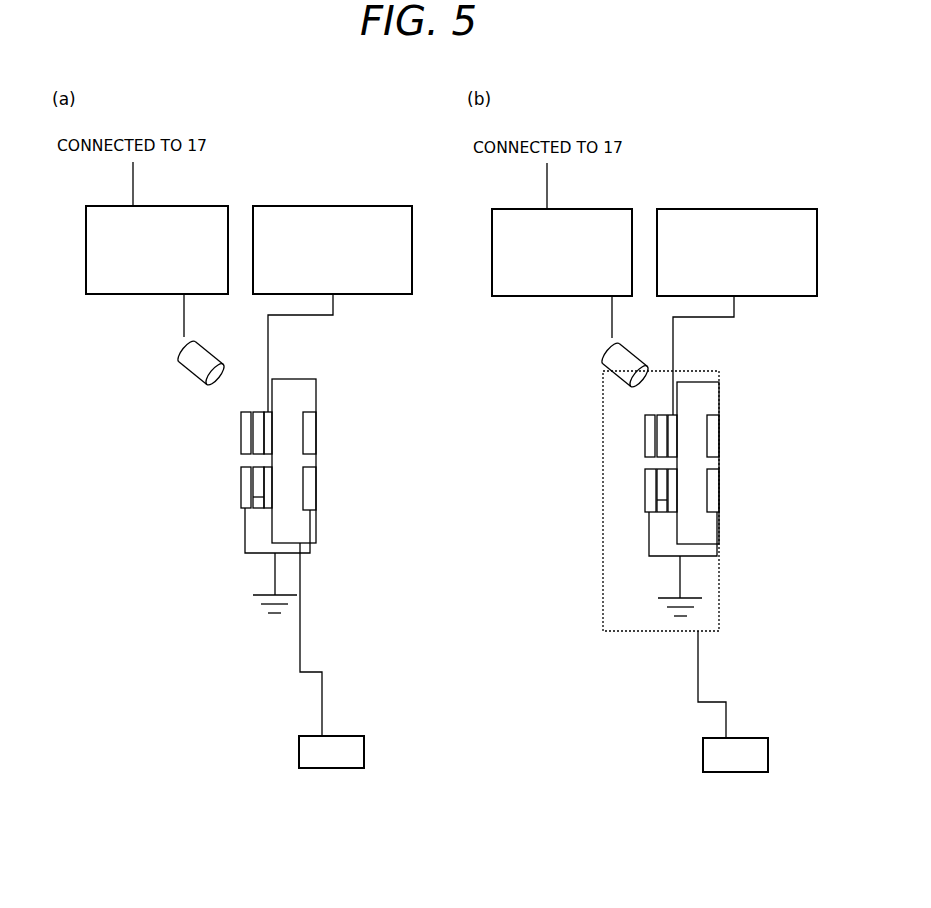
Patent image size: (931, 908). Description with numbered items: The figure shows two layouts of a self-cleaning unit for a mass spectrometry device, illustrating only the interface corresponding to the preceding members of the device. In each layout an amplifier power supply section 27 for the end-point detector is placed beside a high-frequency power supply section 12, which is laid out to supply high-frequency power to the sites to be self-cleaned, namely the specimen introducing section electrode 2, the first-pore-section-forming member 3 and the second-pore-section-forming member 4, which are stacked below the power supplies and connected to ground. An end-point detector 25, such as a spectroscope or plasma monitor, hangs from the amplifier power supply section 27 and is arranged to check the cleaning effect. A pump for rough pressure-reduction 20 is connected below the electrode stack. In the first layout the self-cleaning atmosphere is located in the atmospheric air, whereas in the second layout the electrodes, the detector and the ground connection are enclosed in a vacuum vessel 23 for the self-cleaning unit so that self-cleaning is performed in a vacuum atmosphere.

The amplifier power supply section 27 is at (175, 206).
The high-frequency power supply section 12 is at (362, 206).
The end-point detector 25 is at (185, 367).
The specimen introducing section electrode 2 is at (240, 432).
The first-pore-section-forming member 3 is at (263, 479).
The second-pore-section-forming member 4 is at (313, 483).
The vacuum vessel for the self-cleaning unit 23 is at (620, 589).
The pump for rough pressure-reduction 20 is at (332, 763).